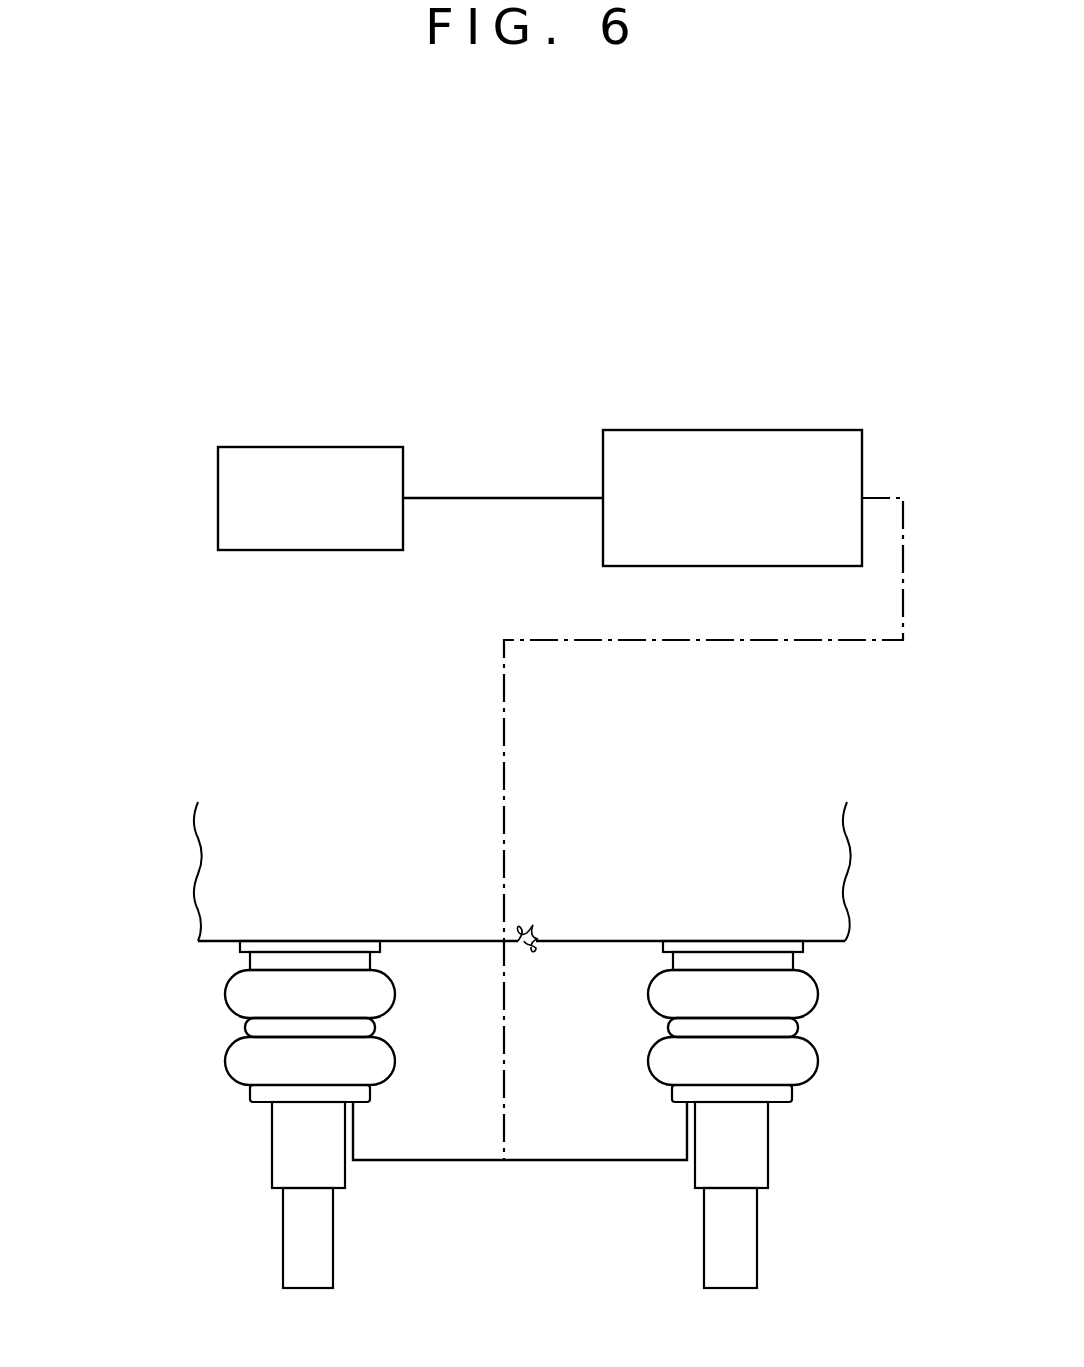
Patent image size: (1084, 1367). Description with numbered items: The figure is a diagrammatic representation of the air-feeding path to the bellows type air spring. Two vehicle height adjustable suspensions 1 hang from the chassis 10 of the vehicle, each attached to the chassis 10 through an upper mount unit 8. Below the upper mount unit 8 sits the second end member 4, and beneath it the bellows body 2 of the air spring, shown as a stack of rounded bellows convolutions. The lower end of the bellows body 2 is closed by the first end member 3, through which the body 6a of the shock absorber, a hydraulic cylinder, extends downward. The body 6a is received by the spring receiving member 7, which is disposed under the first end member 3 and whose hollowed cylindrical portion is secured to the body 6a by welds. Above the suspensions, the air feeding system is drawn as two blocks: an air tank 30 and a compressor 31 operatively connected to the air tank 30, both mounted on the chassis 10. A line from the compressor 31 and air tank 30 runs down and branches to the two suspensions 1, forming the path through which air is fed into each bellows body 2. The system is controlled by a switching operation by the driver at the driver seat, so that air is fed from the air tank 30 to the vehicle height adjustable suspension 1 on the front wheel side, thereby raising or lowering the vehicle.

The vehicle height adjustable suspension 1 is at (275, 1058).
The bellows body 2 is at (398, 1043).
The first end member 3 is at (355, 1093).
The second end member 4 is at (293, 957).
The body 6a is at (293, 1253).
The spring receiving member 7 is at (260, 1157).
The upper mount unit 8 is at (323, 943).
The chassis 10 is at (828, 848).
The air tank 30 is at (308, 465).
The compressor 31 is at (718, 452).